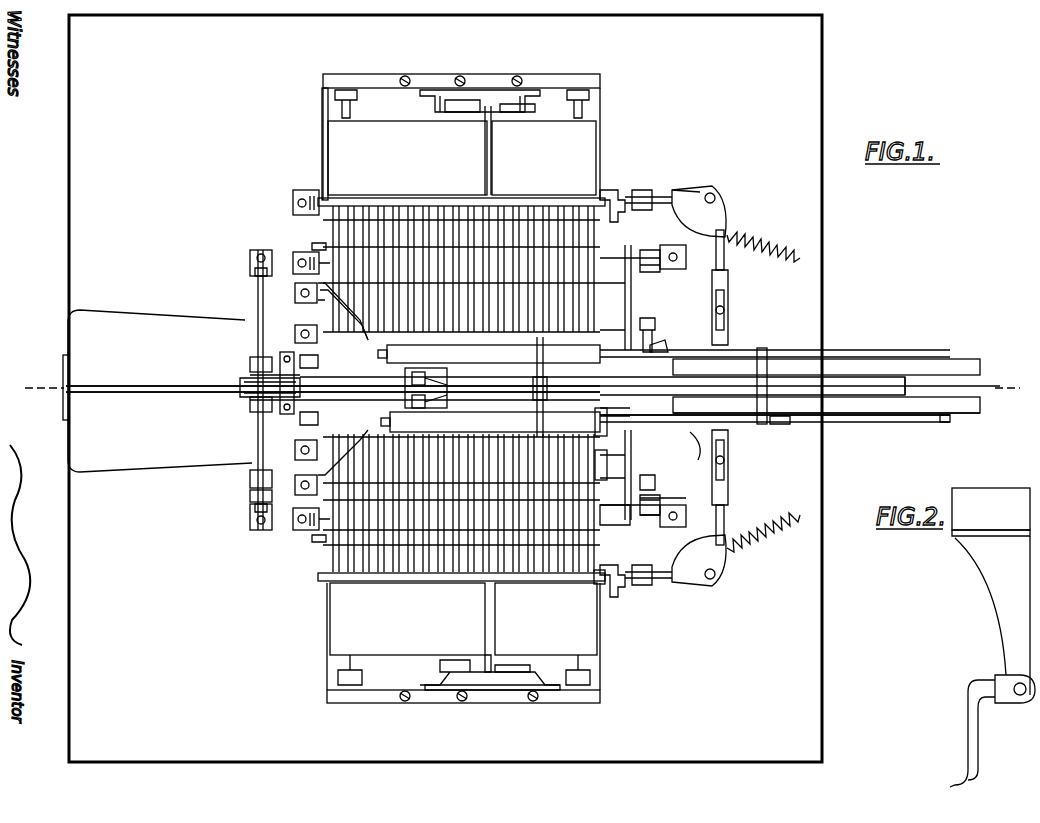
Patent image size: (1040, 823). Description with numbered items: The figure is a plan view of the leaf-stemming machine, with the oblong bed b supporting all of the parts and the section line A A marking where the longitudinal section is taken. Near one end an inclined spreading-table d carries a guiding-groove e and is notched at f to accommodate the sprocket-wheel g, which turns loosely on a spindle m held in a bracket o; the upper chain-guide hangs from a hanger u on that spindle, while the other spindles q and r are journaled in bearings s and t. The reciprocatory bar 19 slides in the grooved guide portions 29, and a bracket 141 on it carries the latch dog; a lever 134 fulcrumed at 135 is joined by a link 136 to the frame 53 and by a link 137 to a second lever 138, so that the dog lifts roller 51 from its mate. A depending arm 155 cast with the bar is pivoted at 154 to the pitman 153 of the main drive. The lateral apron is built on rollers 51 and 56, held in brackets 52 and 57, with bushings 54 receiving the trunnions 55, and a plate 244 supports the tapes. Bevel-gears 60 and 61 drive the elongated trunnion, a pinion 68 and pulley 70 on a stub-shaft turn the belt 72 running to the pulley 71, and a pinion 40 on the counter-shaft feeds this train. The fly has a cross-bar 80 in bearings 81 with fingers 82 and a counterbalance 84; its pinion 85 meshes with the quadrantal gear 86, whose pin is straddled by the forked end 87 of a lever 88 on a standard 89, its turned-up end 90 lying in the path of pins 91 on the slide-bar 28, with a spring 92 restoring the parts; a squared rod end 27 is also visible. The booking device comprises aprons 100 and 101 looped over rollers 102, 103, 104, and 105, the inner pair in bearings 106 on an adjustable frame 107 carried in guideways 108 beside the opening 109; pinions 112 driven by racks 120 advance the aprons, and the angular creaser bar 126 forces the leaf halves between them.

In FIG. 1, the bed b is at (818, 90).
In FIG. 1, the section line A is at (518, 388).
In FIG. 1, the guideways 108 is at (486, 74).
In FIG. 1, the roller 102 is at (326, 100).
In FIG. 1, the roller 105 is at (600, 118).
In FIG. 1, the roller 103 is at (435, 122).
In FIG. 1, the roller 104 is at (530, 108).
In FIG. 1, the pinions 112 is at (465, 110).
In FIG. 1, the angular bar 126 is at (487, 178).
In FIG. 1, the apron 100 is at (407, 388).
In FIG. 1, the apron 101 is at (544, 388).
In FIG. 1, the cross-bar 80 is at (373, 200).
In FIG. 1, the bearings 81 is at (308, 192).
In FIG. 1, the counterbalance 84 is at (612, 190).
In FIG. 1, the fingers 82 is at (322, 240).
In FIG. 1, the roller 56 is at (320, 250).
In FIG. 1, the brackets 57 is at (326, 540).
In FIG. 1, the frame 53 is at (340, 322).
In FIG. 1, the bushing 54 is at (308, 458).
In FIG. 1, the brackets 52 is at (305, 356).
In FIG. 1, the trunnions 55 is at (308, 420).
In FIG. 1, the plate 244 is at (268, 308).
In FIG. 1, the hanger u is at (262, 362).
In FIG. 1, the sprocket-wheel g is at (244, 380).
In FIG. 1, the notch f is at (258, 405).
In FIG. 1, the guiding-groove e is at (134, 400).
In FIG. 1, the spreading-table d is at (162, 458).
In FIG. 1, the spindle m is at (254, 484).
In FIG. 1, the bracket o is at (250, 265).
In FIG. 1, the slide-bar 28 is at (489, 353).
In FIG. 1, the squared end 27 is at (490, 423).
In FIG. 1, the roller 51 is at (450, 388).
In FIG. 1, the pins 91 is at (537, 352).
In FIG. 1, the pulley 71 is at (600, 422).
In FIG. 1, the link 136 is at (605, 408).
In FIG. 1, the bevel-gears 60 is at (650, 272).
In FIG. 1, the bearing t is at (665, 312).
In FIG. 1, the spindle q is at (660, 350).
In FIG. 1, the bearing s is at (673, 290).
In FIG. 1, the spindle r is at (660, 500).
In FIG. 1, the pinion 40 is at (702, 471).
In FIG. 1, the driving-belt 72 is at (608, 465).
In FIG. 1, the pinion 68 is at (600, 528).
In FIG. 1, the bevel-gears 61 is at (655, 522).
In FIG. 1, the pinion 85 is at (672, 192).
In FIG. 1, the quadrantal gear 86 is at (700, 192).
In FIG. 1, the forked end 87 is at (726, 225).
In FIG. 1, the lever 88 is at (728, 270).
In FIG. 1, the standard 89 is at (728, 312).
In FIG. 1, the retractile helical spring 92 is at (763, 384).
In FIG. 1, the turned-up end 90 is at (730, 350).
In FIG. 1, the bracket 141 is at (770, 356).
In FIG. 1, the reciprocatory bar 19 is at (858, 375).
In FIG. 2, the reciprocatory bar 19 is at (994, 502).
In FIG. 1, the guide portions 29 is at (962, 360).
In FIG. 1, the fulcrum 135 is at (778, 420).
In FIG. 1, the second lever 138 is at (853, 420).
In FIG. 1, the lever 134 is at (898, 420).
In FIG. 1, the link 137 is at (940, 420).
In FIG. 1, the opening 109 is at (335, 672).
In FIG. 1, the toothed racks 120 is at (452, 658).
In FIG. 1, the bearings 106 is at (470, 686).
In FIG. 1, the adjustable frame 107 is at (502, 690).
In FIG. 1, the pulley 70 is at (596, 576).
In FIG. 2, the depending arm 155 is at (1002, 612).
In FIG. 2, the pivot 154 is at (1017, 699).
In FIG. 2, the pitman 153 is at (968, 725).